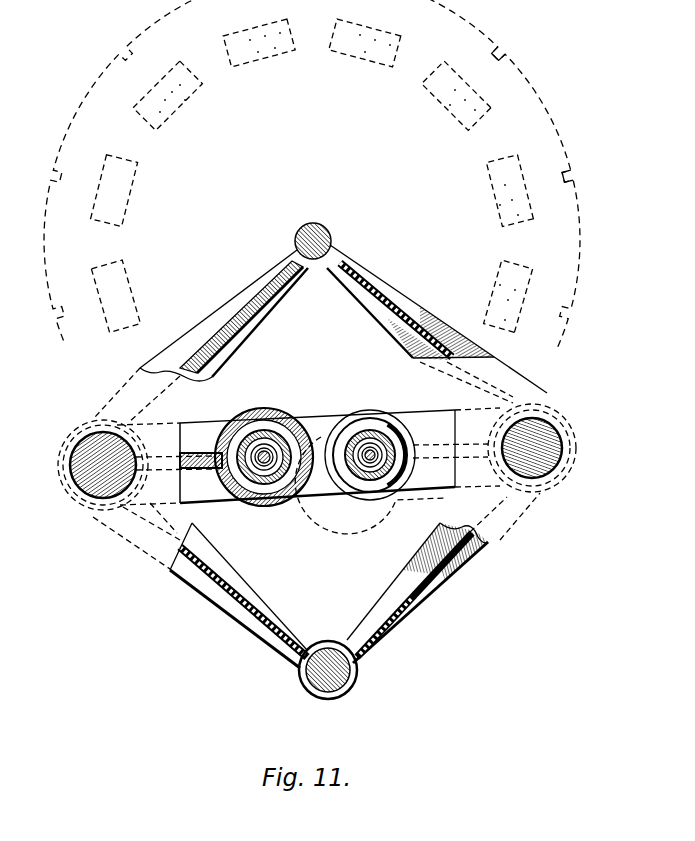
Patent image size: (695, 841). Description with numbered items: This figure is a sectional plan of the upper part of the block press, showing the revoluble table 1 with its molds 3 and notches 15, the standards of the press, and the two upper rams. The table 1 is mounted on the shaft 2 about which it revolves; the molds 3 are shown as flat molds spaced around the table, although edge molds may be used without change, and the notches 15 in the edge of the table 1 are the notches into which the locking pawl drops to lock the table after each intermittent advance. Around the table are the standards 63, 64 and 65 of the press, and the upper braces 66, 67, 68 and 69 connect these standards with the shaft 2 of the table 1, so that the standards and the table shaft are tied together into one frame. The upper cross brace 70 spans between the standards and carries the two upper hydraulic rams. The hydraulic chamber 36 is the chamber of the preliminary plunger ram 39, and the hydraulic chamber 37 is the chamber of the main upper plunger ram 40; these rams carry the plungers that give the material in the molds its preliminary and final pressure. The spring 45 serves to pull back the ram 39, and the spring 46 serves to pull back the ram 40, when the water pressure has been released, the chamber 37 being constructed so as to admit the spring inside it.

The revoluble table 1 is at (408, 90).
The notches 15 is at (505, 54).
The molds 3 is at (181, 62).
The shaft 2 is at (320, 238).
The upper brace 69 is at (236, 297).
The upper brace 66 is at (402, 298).
The upper brace 68 is at (240, 613).
The upper brace 67 is at (423, 597).
The standard 63 is at (95, 487).
The standard 64 is at (558, 450).
The standard 65 is at (310, 683).
The upper cross brace 70 is at (430, 486).
The ram 40 is at (248, 497).
The hydraulic chamber of the main upper plunger ram 37 is at (266, 437).
The spring 46 is at (265, 422).
The hydraulic chamber of the preliminary plunger ram 36 is at (367, 478).
The ram 39 is at (381, 432).
The spring 45 is at (364, 431).